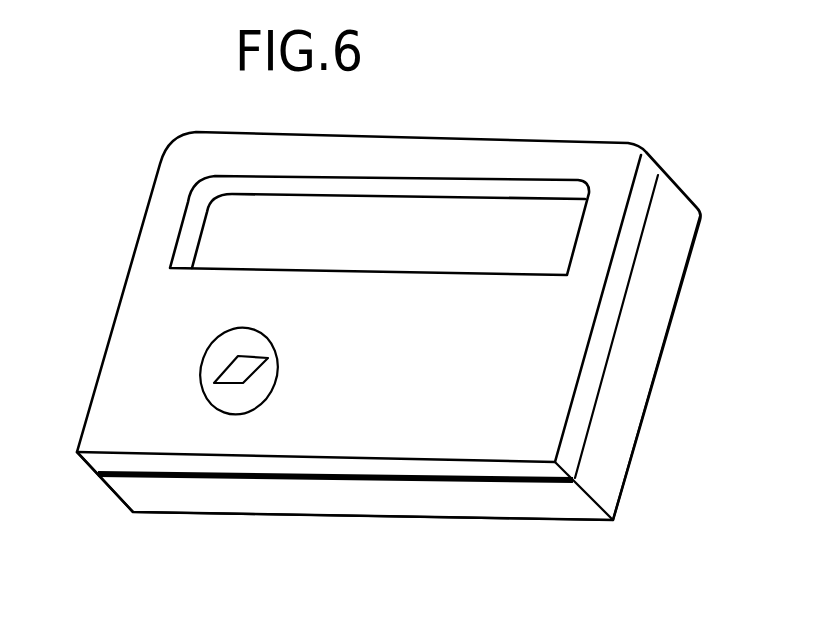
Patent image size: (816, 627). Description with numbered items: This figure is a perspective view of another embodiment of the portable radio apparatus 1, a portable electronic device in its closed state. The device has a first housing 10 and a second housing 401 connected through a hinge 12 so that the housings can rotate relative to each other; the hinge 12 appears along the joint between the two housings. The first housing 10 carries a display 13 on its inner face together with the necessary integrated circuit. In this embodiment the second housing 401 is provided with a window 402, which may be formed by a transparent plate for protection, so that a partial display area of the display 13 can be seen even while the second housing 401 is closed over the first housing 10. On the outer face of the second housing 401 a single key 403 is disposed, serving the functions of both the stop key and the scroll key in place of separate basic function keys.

The portable radio apparatus 1 is at (671, 146).
The first housing 10 is at (638, 380).
The hinge portion 12 is at (577, 478).
The display 13 is at (423, 225).
The second housing 401 is at (148, 300).
The window 402 is at (228, 220).
The single key 403 is at (242, 398).